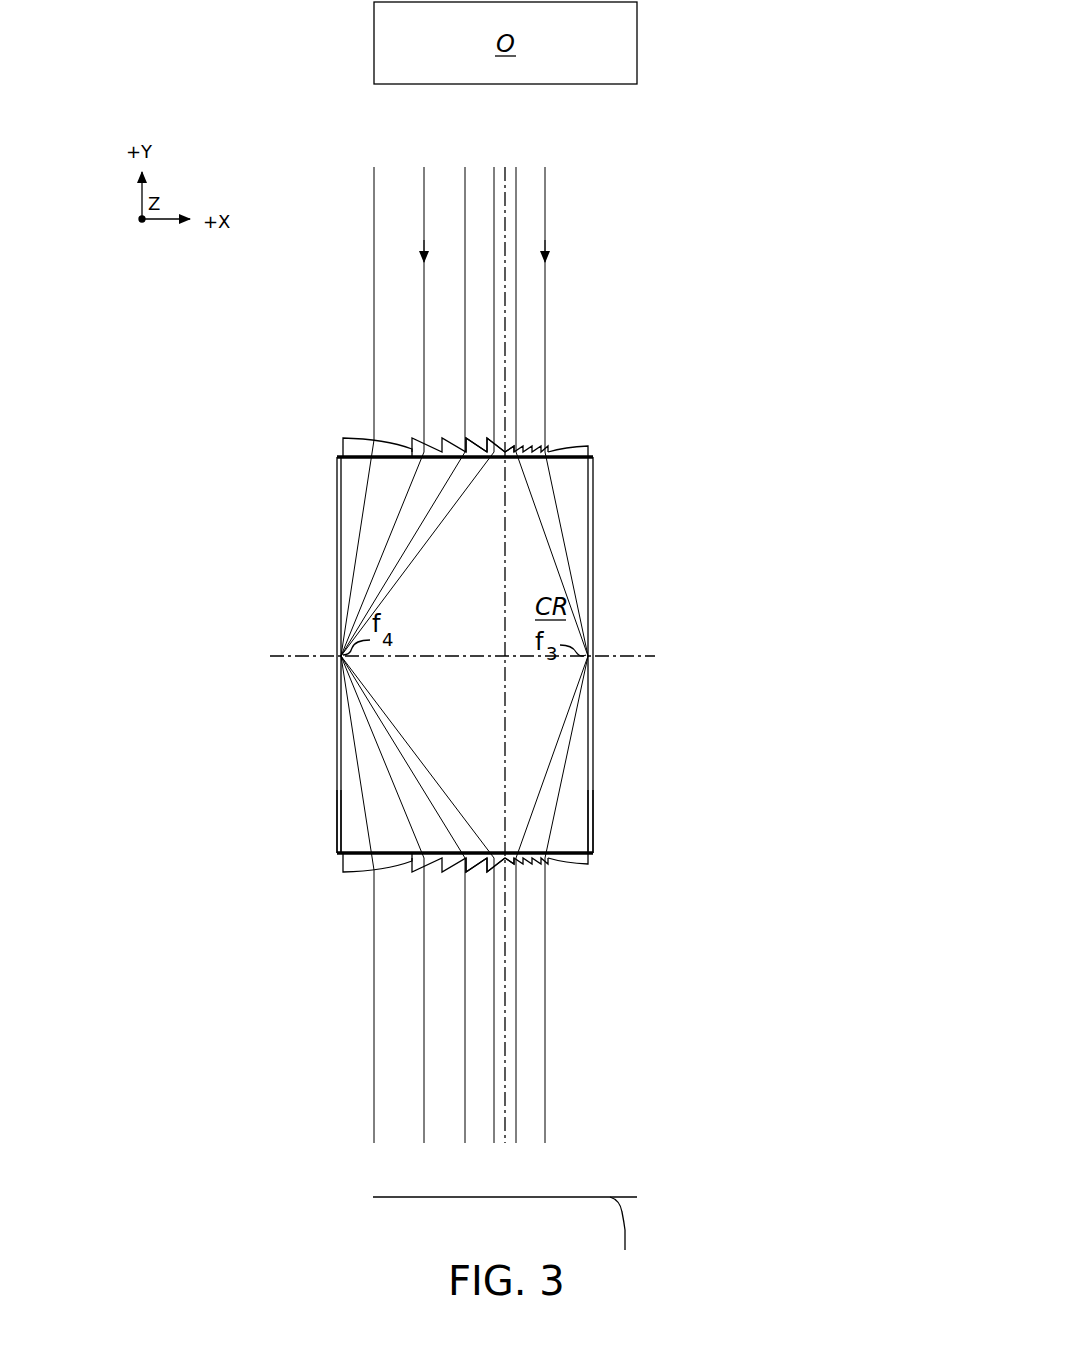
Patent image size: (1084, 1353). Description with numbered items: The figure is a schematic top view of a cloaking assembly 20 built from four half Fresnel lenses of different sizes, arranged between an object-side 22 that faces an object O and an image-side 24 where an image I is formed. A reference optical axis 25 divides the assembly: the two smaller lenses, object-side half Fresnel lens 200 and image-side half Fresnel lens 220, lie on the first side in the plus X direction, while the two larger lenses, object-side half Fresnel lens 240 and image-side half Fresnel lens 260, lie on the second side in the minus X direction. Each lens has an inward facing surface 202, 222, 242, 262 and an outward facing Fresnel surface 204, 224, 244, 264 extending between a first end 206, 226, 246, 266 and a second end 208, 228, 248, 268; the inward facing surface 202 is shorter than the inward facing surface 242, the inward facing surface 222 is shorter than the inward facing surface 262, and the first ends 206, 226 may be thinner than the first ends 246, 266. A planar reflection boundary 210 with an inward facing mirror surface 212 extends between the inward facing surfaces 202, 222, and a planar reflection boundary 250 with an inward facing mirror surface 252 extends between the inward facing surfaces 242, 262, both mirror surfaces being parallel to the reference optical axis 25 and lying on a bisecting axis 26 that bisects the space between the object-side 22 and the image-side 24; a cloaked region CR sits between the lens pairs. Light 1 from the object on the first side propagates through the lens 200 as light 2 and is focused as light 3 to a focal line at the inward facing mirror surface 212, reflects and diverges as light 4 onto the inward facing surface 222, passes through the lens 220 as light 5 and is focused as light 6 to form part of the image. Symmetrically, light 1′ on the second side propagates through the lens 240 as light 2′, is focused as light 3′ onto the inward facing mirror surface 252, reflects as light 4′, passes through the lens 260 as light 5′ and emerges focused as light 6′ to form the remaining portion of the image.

The light from object 1 is at (546, 243).
The light from object 1′ is at (424, 240).
The light propagating through object-side half Fresnel lens 2 is at (553, 452).
The light propagating through object-side half Fresnel lens 2′ is at (413, 443).
The focused light 3 is at (578, 556).
The focused light 3′ is at (395, 513).
The reflected diverging light 4 is at (574, 748).
The reflected diverging light 4′ is at (378, 760).
The light propagating through image-side half Fresnel lens 5 is at (553, 862).
The light propagating through image-side half Fresnel lens 5′ is at (412, 870).
The focused image light 6 is at (545, 1005).
The focused image light 6′ is at (424, 1002).
The cloaking assembly 20 is at (740, 162).
The object-side 22 is at (738, 242).
The image-side 24 is at (752, 908).
The reference optical axis 25 is at (507, 173).
The bisecting axis 26 is at (646, 657).
The object-side half Fresnel lens 200 is at (627, 418).
The inward facing surface 202 is at (590, 462).
The outward facing Fresnel surface 204 is at (580, 449).
The first end 206 is at (592, 451).
The second end 208 is at (512, 470).
The planar reflection boundary 210 is at (593, 633).
The inward facing mirror surface 212 is at (590, 700).
The image-side half Fresnel lens 220 is at (628, 897).
The inward facing surface 222 is at (592, 849).
The outward facing Fresnel surface 224 is at (590, 863).
The first end 226 is at (593, 861).
The second end 228 is at (507, 852).
The object-side half Fresnel lens 240 is at (328, 430).
The inward facing surface 242 is at (341, 462).
The outward facing Fresnel surface 244 is at (353, 437).
The first end 246 is at (343, 446).
The second end 248 is at (500, 462).
The planar reflection boundary 250 is at (337, 630).
The inward facing mirror surface 252 is at (341, 685).
The image-side half Fresnel lens 260 is at (330, 878).
The inward facing surface 262 is at (341, 848).
The outward facing Fresnel surface 264 is at (355, 872).
The first end 266 is at (343, 862).
The second end 268 is at (493, 851).